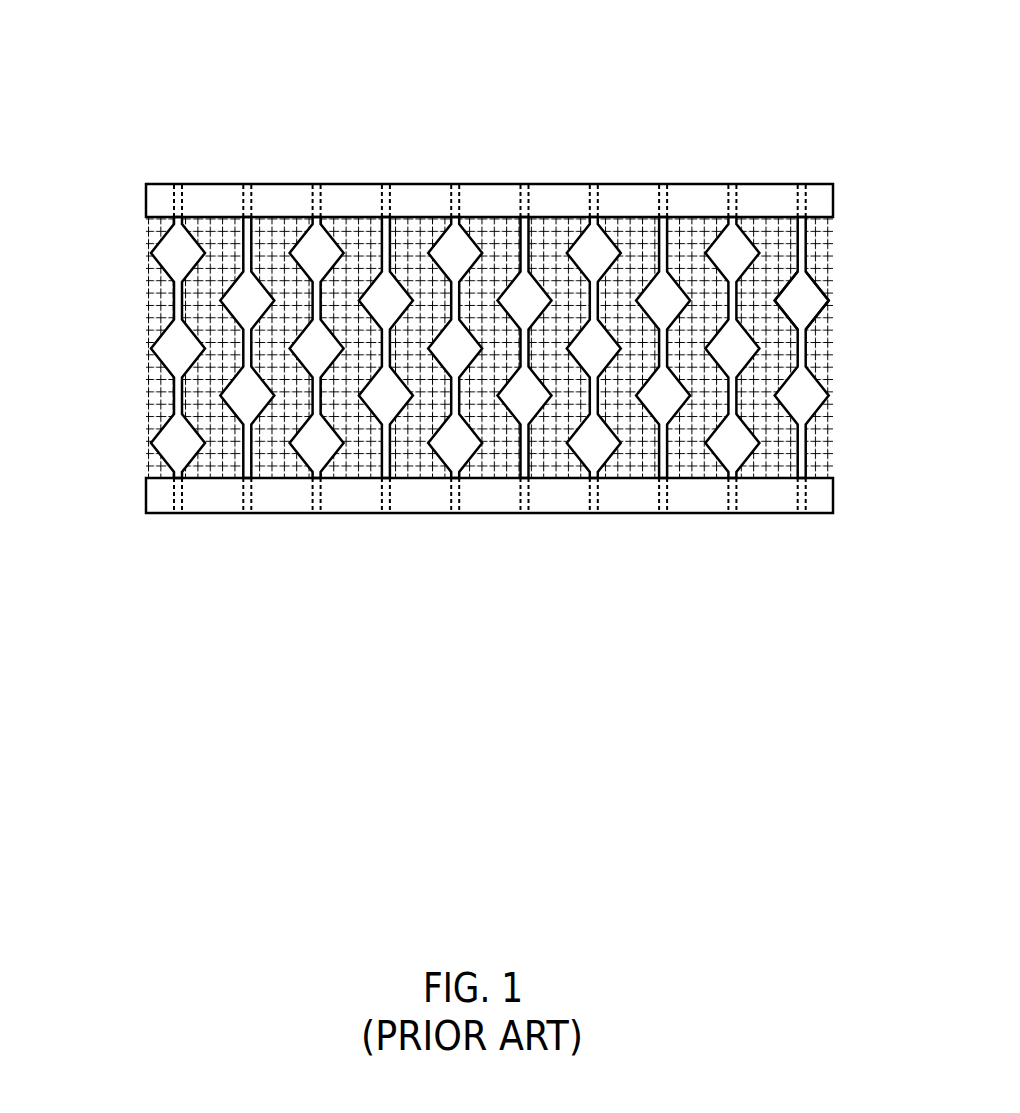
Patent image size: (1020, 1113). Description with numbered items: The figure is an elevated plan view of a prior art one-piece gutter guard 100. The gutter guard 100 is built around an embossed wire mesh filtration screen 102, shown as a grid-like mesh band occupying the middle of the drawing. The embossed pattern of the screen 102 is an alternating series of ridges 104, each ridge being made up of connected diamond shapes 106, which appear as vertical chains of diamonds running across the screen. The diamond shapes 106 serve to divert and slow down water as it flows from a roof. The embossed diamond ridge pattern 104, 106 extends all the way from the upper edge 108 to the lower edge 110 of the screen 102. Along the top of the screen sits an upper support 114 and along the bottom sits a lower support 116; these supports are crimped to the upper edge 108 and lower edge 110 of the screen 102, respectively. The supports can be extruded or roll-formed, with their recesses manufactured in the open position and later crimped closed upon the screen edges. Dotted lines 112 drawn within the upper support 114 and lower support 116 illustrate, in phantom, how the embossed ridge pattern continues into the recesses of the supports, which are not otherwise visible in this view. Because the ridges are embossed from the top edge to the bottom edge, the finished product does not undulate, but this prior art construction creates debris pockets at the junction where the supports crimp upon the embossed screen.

The one-piece gutter guard 100 is at (474, 298).
The embossed wire mesh filtration screen 102 is at (270, 243).
The ridges 104 is at (806, 352).
The diamond shapes 106 is at (805, 292).
The upper edge 108 is at (133, 195).
The lower edge 110 is at (133, 490).
The dotted lines 112 is at (462, 202).
The upper support 114 is at (693, 203).
The lower support 116 is at (693, 501).